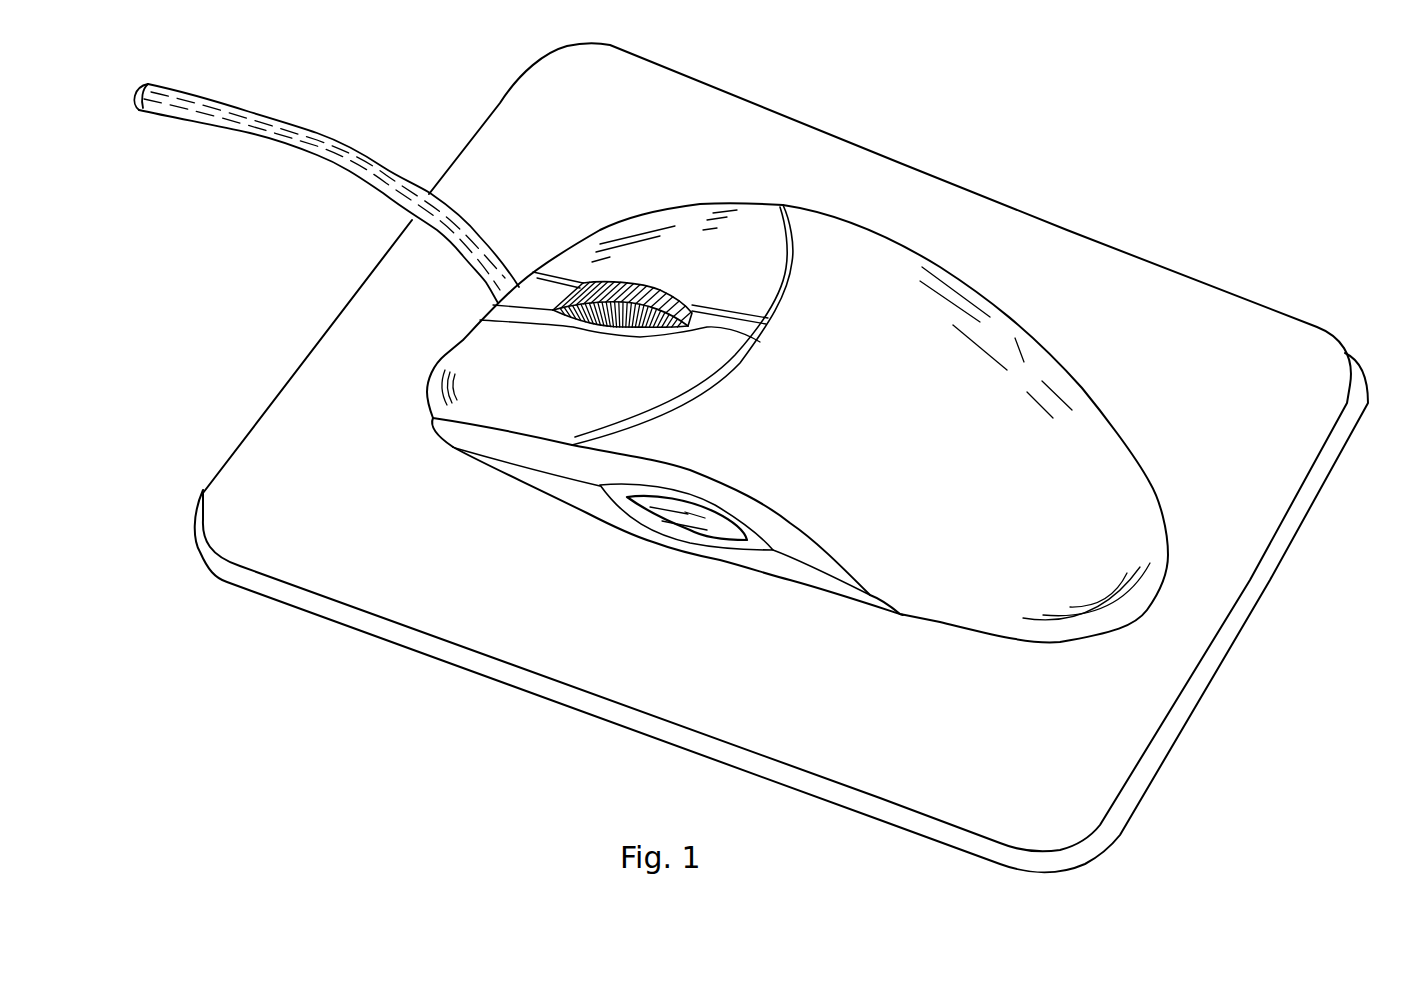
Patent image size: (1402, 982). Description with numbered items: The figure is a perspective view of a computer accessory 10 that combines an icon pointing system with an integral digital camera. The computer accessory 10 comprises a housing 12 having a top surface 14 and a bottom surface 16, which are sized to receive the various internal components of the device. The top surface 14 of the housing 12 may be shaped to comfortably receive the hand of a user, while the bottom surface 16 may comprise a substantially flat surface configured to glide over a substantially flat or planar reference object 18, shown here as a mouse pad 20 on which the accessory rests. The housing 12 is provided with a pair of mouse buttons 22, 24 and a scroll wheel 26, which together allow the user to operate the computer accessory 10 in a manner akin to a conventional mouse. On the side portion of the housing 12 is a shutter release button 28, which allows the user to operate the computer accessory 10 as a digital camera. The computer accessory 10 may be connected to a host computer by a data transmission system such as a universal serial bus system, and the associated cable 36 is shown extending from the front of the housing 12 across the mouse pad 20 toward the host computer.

The computer accessory 10 is at (751, 457).
The housing 12 is at (776, 389).
The top surface 14 is at (1021, 530).
The bottom surface 16 is at (678, 531).
The reference object 18 is at (767, 457).
The mouse pad 20 is at (430, 657).
The mouse button 22 is at (487, 354).
The mouse button 24 is at (760, 220).
The scroll wheel 26 is at (667, 290).
The shutter release button 28 is at (667, 520).
The cable 36 is at (304, 158).